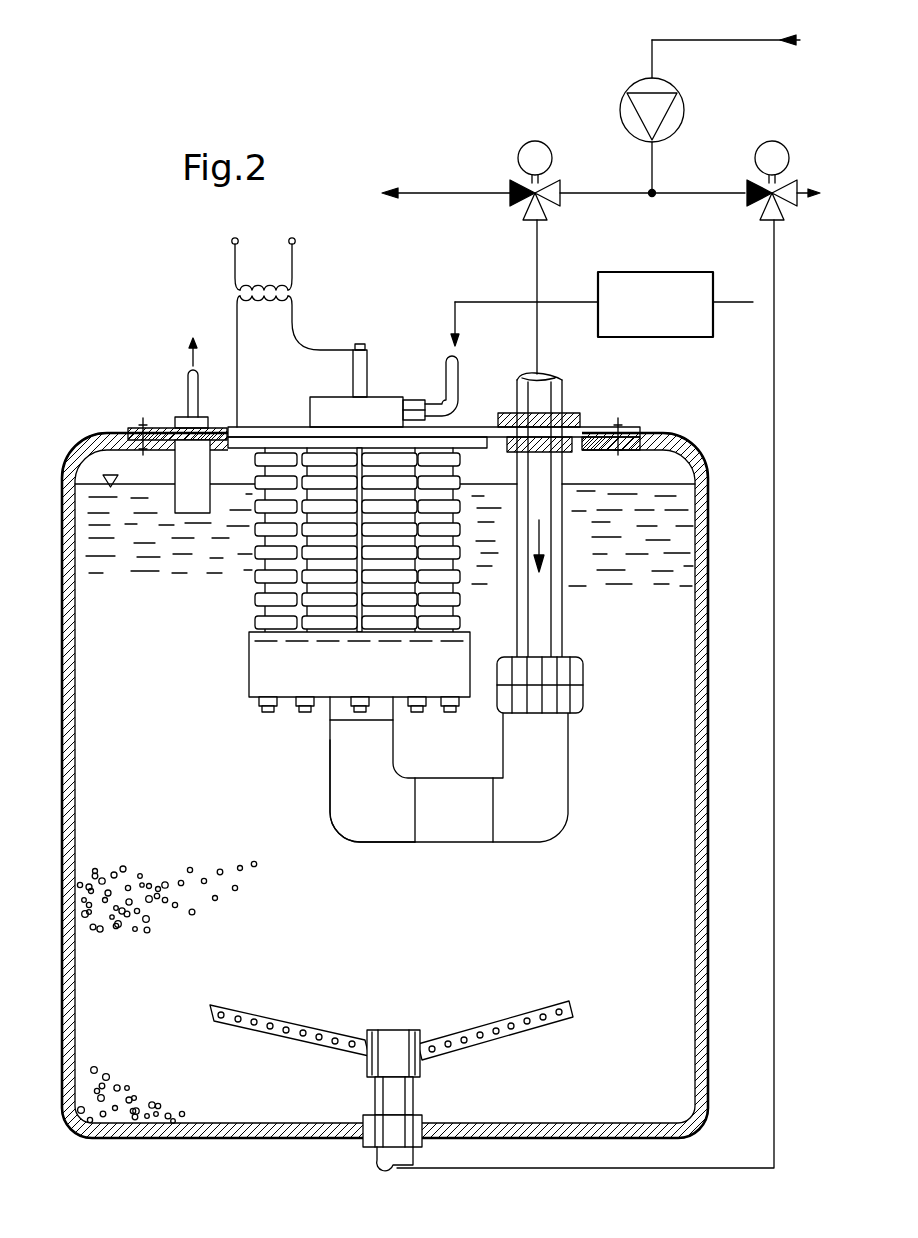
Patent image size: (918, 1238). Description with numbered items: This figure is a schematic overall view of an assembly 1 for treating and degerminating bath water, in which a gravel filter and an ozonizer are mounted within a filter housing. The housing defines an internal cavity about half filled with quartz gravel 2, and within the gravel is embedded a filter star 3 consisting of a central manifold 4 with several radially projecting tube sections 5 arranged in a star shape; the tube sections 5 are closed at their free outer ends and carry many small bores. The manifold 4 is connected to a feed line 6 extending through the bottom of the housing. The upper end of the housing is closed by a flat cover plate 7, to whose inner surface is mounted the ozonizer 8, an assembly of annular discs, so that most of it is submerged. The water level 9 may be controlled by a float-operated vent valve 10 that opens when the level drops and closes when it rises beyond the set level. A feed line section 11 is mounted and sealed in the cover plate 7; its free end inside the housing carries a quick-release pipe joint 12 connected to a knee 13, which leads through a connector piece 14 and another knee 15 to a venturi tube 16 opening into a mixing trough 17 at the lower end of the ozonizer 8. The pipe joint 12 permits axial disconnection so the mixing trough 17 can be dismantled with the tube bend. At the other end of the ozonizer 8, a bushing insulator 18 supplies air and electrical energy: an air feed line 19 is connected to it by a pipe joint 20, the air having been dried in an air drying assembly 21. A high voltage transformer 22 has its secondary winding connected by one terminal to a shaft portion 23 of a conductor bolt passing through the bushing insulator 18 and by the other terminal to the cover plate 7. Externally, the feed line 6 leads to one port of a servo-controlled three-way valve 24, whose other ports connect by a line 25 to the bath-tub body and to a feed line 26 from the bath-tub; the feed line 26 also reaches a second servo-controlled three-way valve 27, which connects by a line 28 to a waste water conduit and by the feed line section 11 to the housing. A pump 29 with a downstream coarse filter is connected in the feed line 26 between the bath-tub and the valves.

The assembly for treating and degerminating bath water 1 is at (68, 719).
The quartz gravel 2 is at (150, 920).
The filter star 3 is at (391, 1073).
The central manifold 4 is at (383, 1036).
The tube sections 5 is at (278, 1037).
The feed line 6 is at (772, 742).
The cover plate 7 is at (588, 428).
The ozonizer 8 is at (243, 578).
The water level 9 is at (660, 480).
The vent valve 10 is at (181, 510).
The feed line section 11 is at (553, 608).
The quick-release pipe joint 12 is at (583, 695).
The knee 13 is at (580, 815).
The connector piece 14 is at (452, 830).
The knee 15 is at (355, 828).
The venturi tube 16 is at (333, 710).
The mixing trough 17 is at (364, 685).
The bushing insulator 18 is at (317, 403).
The air feed line 19 is at (457, 378).
The pipe joint 20 is at (415, 402).
The air drying assembly 21 is at (667, 316).
The high voltage transformer 22 is at (290, 292).
The shaft portion of conductor bolt 23 is at (357, 347).
The servo-controlled three-way valve 24 is at (783, 205).
The line 25 is at (798, 187).
The feed line 26 is at (737, 41).
The second servo-controlled three-way valve 27 is at (525, 207).
The line 28 is at (446, 193).
The pump 29 is at (680, 115).